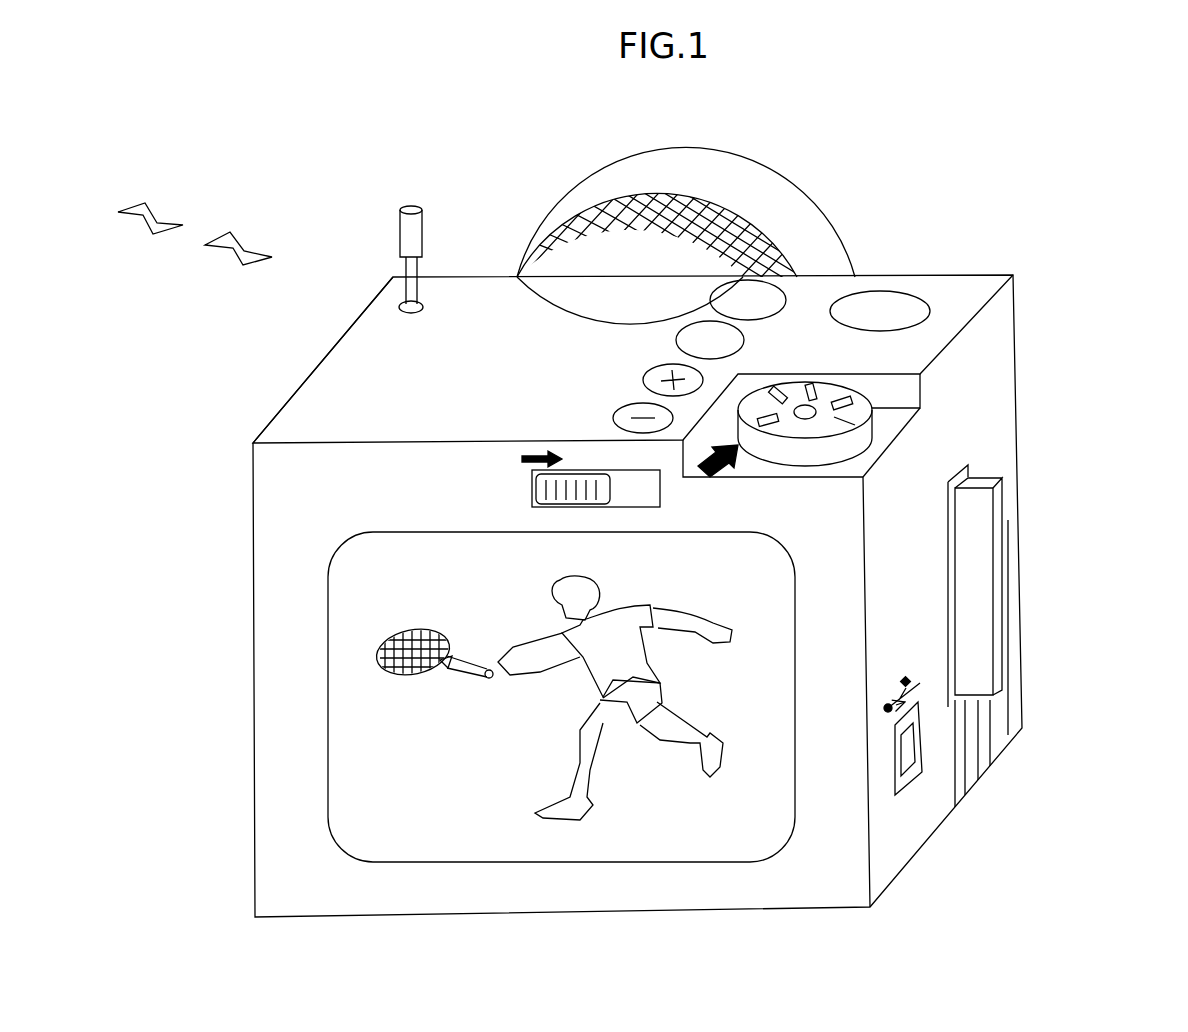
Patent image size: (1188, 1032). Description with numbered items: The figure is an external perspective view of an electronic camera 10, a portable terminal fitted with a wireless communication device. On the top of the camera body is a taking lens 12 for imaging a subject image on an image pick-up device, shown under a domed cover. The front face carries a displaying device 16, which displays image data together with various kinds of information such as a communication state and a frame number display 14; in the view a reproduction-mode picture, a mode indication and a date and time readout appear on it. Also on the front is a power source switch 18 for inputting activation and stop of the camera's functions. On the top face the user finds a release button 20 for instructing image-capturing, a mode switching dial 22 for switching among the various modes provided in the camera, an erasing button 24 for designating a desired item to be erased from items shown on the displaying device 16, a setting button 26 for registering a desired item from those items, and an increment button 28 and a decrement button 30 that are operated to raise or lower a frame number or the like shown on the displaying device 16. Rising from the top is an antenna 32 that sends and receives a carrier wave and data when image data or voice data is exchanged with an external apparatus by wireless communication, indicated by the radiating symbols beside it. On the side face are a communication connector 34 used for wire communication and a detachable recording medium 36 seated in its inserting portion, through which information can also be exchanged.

The electronic camera 10 is at (1043, 357).
The taking lens 12 is at (770, 193).
The frame number display 14 is at (477, 540).
The displaying device 16 is at (365, 750).
The power source switch 18 is at (508, 483).
The release button 20 is at (900, 313).
The mode switching dial 22 is at (847, 418).
The erasing button 24 is at (793, 300).
The setting button 26 is at (668, 327).
The increment button 28 is at (640, 372).
The decrement button 30 is at (608, 415).
The antenna 32 is at (405, 238).
The communication connector 34 is at (905, 782).
The detachable recording medium 36 is at (968, 577).